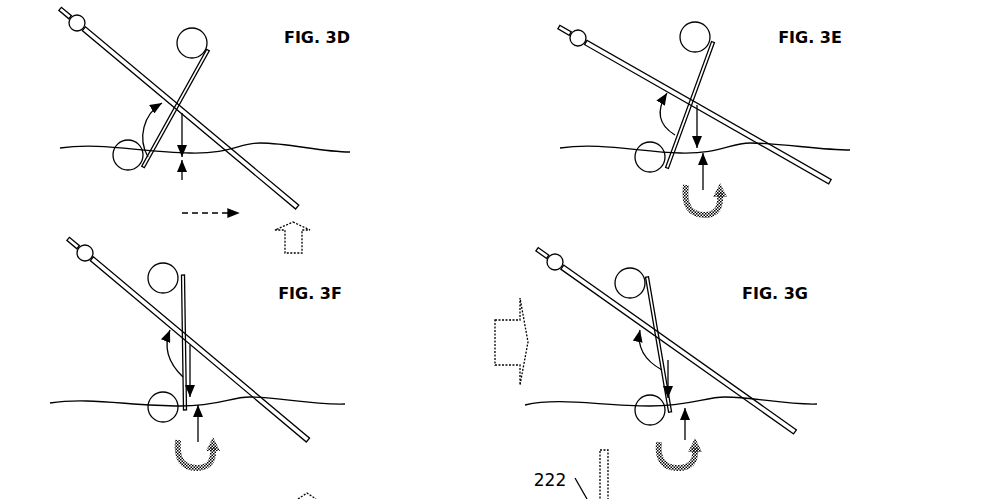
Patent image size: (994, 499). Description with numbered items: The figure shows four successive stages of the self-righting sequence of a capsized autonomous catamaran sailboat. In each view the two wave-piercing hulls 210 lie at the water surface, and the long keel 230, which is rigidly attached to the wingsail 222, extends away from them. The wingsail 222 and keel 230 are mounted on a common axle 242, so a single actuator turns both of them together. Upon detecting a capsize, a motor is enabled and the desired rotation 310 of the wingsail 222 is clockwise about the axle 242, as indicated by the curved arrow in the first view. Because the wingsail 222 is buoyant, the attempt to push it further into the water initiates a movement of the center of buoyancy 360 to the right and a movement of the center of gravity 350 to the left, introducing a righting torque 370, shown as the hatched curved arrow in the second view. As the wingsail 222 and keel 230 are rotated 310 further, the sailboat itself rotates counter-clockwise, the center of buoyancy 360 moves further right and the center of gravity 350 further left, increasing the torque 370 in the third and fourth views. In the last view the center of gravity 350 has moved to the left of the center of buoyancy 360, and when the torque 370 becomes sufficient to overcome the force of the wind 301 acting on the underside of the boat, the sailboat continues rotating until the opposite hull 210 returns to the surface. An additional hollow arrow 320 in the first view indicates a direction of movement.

In FIG. 3D, the wave-piercing hull 210 is at (122, 167).
In FIG. 3E, the wave-piercing hull 210 is at (643, 167).
In FIG. 3F, the wave-piercing hull 210 is at (173, 422).
In FIG. 3G, the wave-piercing hull 210 is at (650, 410).
In FIG. 3D, the wingsail 222 is at (245, 157).
In FIG. 3E, the wingsail 222 is at (770, 143).
In FIG. 3F, the wingsail 222 is at (253, 387).
In FIG. 3G, the wingsail 222 is at (733, 383).
In FIG. 3D, the keel 230 is at (97, 37).
In FIG. 3E, the keel 230 is at (603, 45).
In FIG. 3F, the keel 230 is at (188, 339).
In FIG. 3G, the keel 230 is at (568, 267).
In FIG. 3D, the axle 242 is at (185, 108).
In FIG. 3E, the axle 242 is at (698, 103).
In FIG. 3F, the axle 242 is at (193, 340).
In FIG. 3G, the axle 242 is at (670, 340).
In FIG. 3G, the wind 301 is at (512, 327).
In FIG. 3D, the rotation 310 is at (152, 117).
In FIG. 3E, the rotation 310 is at (663, 117).
In FIG. 3F, the rotation 310 is at (167, 343).
In FIG. 3G, the rotation 310 is at (647, 360).
In FIG. 3D, the lift direction 320 is at (295, 238).
In FIG. 3D, the center of gravity 350 is at (185, 133).
In FIG. 3E, the center of gravity 350 is at (697, 128).
In FIG. 3F, the center of gravity 350 is at (193, 367).
In FIG. 3G, the center of gravity 350 is at (673, 368).
In FIG. 3D, the center of buoyancy 360 is at (185, 183).
In FIG. 3E, the center of buoyancy 360 is at (705, 170).
In FIG. 3F, the center of buoyancy 360 is at (200, 423).
In FIG. 3G, the center of buoyancy 360 is at (687, 420).
In FIG. 3E, the righting torque 370 is at (703, 213).
In FIG. 3F, the righting torque 370 is at (210, 460).
In FIG. 3G, the righting torque 370 is at (693, 460).